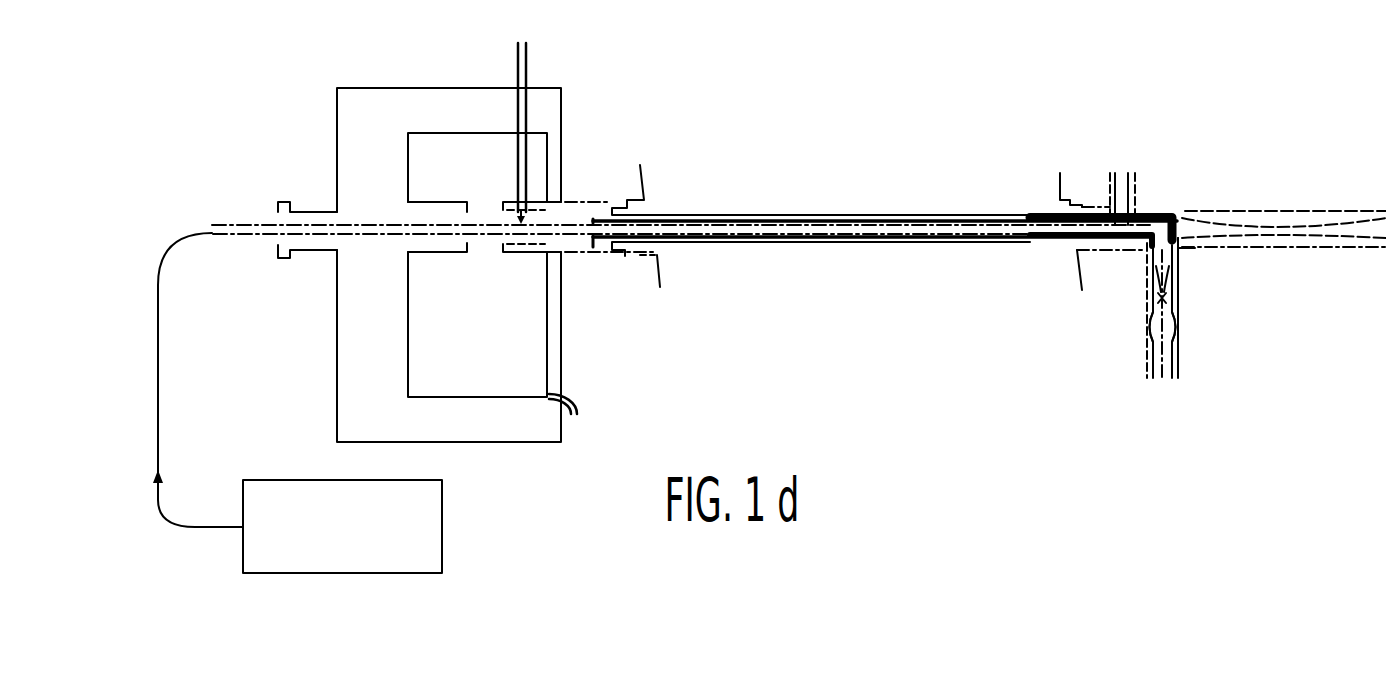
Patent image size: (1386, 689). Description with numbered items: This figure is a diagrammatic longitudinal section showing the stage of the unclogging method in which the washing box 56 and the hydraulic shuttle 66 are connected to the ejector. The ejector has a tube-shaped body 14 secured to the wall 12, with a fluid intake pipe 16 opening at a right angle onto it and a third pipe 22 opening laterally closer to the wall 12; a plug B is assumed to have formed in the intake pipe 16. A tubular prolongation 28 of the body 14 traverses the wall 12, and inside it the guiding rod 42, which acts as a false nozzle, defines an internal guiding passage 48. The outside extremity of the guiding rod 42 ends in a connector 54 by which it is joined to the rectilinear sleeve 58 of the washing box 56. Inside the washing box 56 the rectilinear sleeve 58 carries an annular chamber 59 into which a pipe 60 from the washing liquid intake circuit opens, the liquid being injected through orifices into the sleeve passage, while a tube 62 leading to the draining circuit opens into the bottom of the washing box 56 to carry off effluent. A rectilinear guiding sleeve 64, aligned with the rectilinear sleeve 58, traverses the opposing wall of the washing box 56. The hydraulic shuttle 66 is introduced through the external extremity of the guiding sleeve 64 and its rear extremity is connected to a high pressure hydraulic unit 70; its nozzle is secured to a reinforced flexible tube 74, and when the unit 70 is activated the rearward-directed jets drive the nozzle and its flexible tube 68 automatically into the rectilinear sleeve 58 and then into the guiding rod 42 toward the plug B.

The wall 12 is at (852, 152).
The body 14 is at (1298, 248).
The fluid intake pipe 16 is at (1180, 367).
The third pipe 22 is at (1139, 183).
The tubular prolongation 28 is at (885, 240).
The guiding rod 42 is at (985, 211).
The internal guiding passage 48 is at (676, 227).
The connector 54 is at (593, 247).
The washing box 56 is at (311, 137).
The rectilinear sleeve 58 is at (583, 200).
The annular chamber 59 is at (523, 250).
The pipe 60 is at (526, 62).
The tube 62 is at (573, 397).
The guiding sleeve 64 is at (440, 243).
The hydraulic shuttle 66 is at (1167, 277).
The flexible tube 68 is at (240, 236).
The high pressure hydraulic unit 70 is at (442, 543).
The reinforced flexible tube 74 is at (163, 362).
The plug B is at (1148, 333).